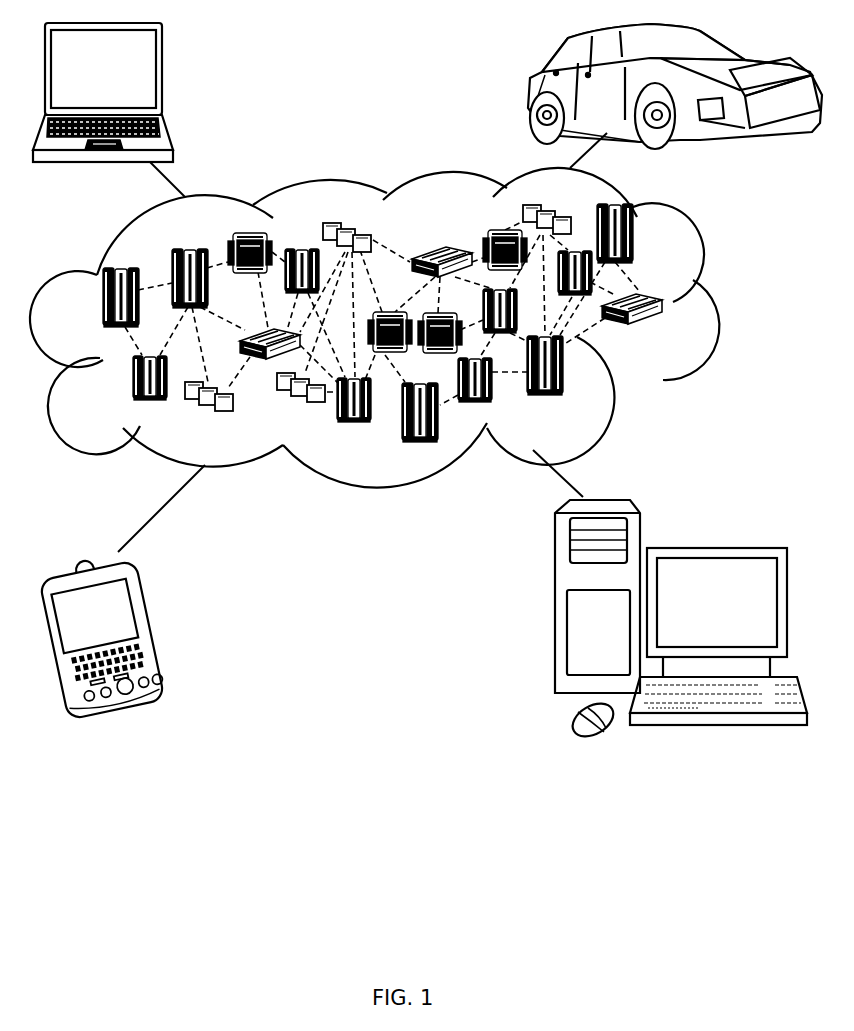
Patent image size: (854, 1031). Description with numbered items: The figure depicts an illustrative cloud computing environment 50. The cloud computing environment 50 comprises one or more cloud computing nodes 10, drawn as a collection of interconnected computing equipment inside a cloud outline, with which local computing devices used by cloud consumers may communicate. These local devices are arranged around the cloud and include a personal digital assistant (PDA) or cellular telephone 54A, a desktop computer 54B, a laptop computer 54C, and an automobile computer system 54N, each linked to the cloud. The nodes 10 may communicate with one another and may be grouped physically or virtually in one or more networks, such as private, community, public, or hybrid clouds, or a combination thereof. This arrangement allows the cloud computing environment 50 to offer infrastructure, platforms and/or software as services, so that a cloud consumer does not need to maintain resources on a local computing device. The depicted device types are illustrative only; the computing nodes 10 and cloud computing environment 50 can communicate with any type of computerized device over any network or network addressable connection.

The cloud computing node 10 is at (674, 334).
The cloud computing environment 50 is at (713, 305).
The personal digital assistant (PDA) or cellular telephone 54A is at (152, 627).
The desktop computer 54B is at (713, 545).
The laptop computer 54C is at (163, 73).
The automobile computer system 54N is at (526, 86).